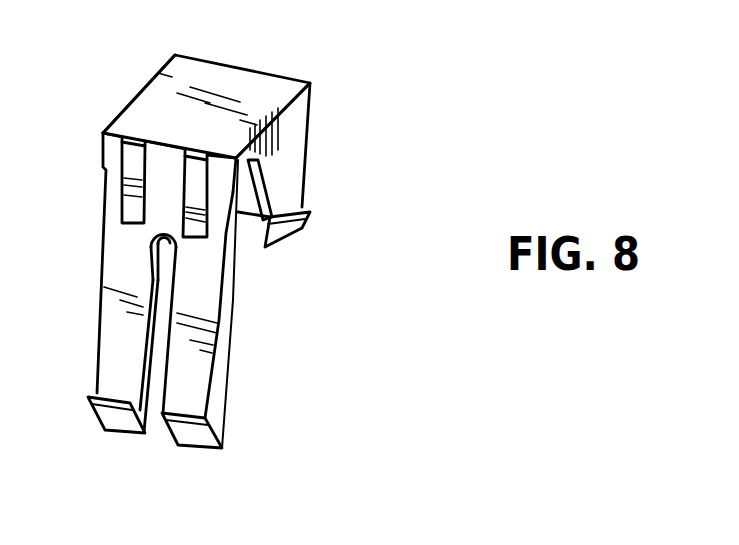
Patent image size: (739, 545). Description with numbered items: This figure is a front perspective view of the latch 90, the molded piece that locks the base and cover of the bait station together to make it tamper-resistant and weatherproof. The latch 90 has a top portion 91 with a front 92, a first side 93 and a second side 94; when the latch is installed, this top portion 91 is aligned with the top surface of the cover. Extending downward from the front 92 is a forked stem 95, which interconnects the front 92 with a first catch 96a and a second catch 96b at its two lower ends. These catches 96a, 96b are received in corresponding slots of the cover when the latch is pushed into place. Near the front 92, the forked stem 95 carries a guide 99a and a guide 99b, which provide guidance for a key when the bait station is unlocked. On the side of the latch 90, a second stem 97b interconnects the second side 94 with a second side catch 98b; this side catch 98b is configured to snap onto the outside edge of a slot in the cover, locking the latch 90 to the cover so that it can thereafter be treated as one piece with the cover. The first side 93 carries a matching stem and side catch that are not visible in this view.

The latch 90 is at (393, 58).
The top portion 91 is at (205, 80).
The front 92 is at (170, 153).
The first side 93 is at (140, 93).
The second side 94 is at (284, 116).
The forked stem 95 is at (165, 203).
The first catch 96a is at (120, 420).
The second catch 96b is at (193, 437).
The second stem 97b is at (285, 178).
The second side catch 98b is at (305, 229).
The guide 99a is at (130, 163).
The guide 99b is at (208, 197).